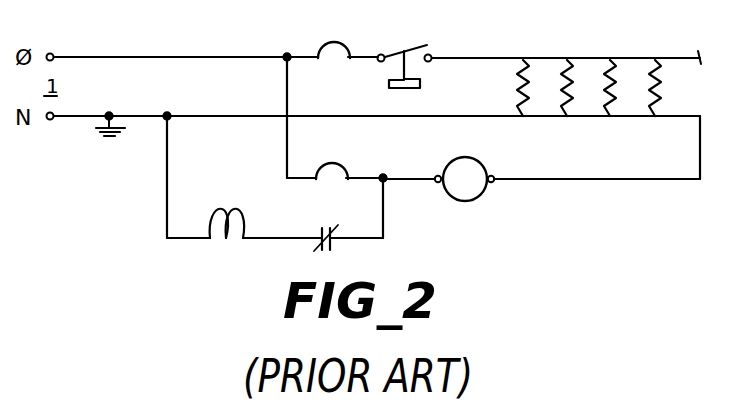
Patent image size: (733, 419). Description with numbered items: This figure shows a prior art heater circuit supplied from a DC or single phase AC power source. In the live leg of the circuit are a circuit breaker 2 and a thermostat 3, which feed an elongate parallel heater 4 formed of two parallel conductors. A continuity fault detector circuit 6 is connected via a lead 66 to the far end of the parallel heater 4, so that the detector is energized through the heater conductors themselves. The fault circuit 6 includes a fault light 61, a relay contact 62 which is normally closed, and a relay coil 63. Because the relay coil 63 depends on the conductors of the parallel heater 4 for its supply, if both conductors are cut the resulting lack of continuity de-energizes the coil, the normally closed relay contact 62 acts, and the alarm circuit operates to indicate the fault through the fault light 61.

The circuit breaker 2 is at (319, 44).
The thermostat 3 is at (412, 42).
The elongate parallel heater 4 is at (634, 118).
The continuity fault detector circuit 6 is at (243, 181).
The fault light 61 is at (233, 205).
The relay contact 62 is at (320, 232).
The relay coil 63 is at (452, 200).
The lead 66 is at (520, 180).